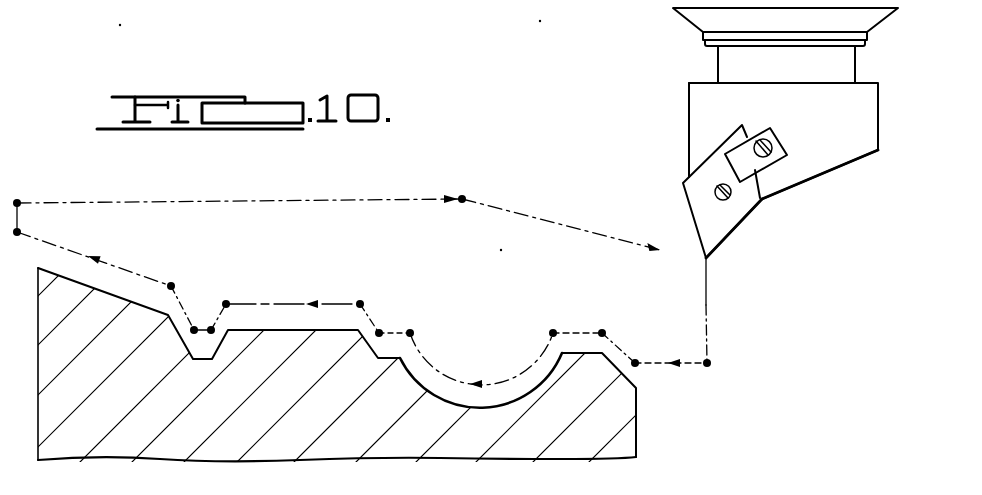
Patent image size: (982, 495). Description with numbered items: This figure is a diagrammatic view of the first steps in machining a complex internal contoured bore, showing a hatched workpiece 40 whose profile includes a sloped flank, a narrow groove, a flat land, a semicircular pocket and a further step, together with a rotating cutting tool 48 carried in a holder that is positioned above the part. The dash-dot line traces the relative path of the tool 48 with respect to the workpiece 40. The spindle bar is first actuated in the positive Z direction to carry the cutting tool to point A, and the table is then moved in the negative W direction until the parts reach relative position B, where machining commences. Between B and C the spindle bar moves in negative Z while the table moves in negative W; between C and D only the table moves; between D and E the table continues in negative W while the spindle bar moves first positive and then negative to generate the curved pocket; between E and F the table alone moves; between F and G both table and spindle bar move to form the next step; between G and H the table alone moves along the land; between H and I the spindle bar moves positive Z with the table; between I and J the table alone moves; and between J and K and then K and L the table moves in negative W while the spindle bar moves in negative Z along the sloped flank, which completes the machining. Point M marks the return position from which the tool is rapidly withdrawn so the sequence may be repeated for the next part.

The workpiece 40 is at (260, 450).
The cutting tool 48 is at (731, 235).
The point A is at (707, 374).
The relative position B is at (637, 372).
The point C is at (604, 326).
The point D is at (550, 326).
The point E is at (413, 326).
The point F is at (383, 326).
The point G is at (362, 297).
The point H is at (229, 296).
The point I is at (209, 337).
The point J is at (192, 323).
The point K is at (171, 278).
The point L is at (11, 241).
The tool path point M is at (13, 194).